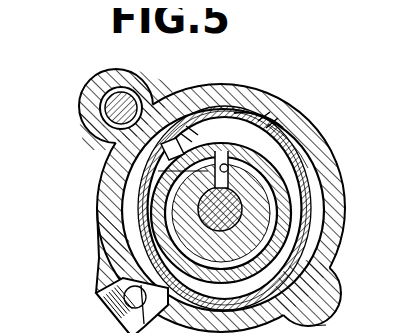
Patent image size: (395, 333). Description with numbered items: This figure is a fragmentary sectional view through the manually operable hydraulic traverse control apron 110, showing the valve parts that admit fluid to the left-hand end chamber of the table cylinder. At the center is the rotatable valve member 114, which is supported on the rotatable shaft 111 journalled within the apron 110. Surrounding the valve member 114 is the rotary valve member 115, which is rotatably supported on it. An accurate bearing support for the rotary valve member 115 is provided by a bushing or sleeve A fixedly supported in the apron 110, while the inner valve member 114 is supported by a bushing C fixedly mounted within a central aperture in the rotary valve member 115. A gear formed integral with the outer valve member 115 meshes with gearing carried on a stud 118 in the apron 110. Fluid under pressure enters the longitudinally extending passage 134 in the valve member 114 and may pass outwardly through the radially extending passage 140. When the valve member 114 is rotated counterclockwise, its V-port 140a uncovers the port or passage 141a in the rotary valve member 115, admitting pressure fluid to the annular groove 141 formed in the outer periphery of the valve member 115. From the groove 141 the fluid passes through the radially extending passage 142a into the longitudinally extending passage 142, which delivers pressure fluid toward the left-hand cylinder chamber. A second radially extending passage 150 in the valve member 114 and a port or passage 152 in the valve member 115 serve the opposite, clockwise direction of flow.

The hydraulic traverse control apron 110 is at (310, 118).
The rotatable shaft 111 is at (228, 198).
The rotatable valve member 114 is at (266, 187).
The rotary valve member 115 is at (293, 170).
The stud 118 is at (100, 91).
The longitudinally extending passage 134 is at (150, 163).
The radially extending passage 140 is at (253, 100).
The V-port 140a is at (197, 124).
The annular groove 141 is at (127, 193).
The port or passage 141a is at (157, 145).
The longitudinally extending passage 142 is at (104, 300).
The radially extending passage 142a is at (135, 272).
The radially extending passage 150 is at (322, 327).
The port or passage 152 is at (280, 106).
The bushing or sleeve A is at (302, 158).
The bushing C is at (317, 246).